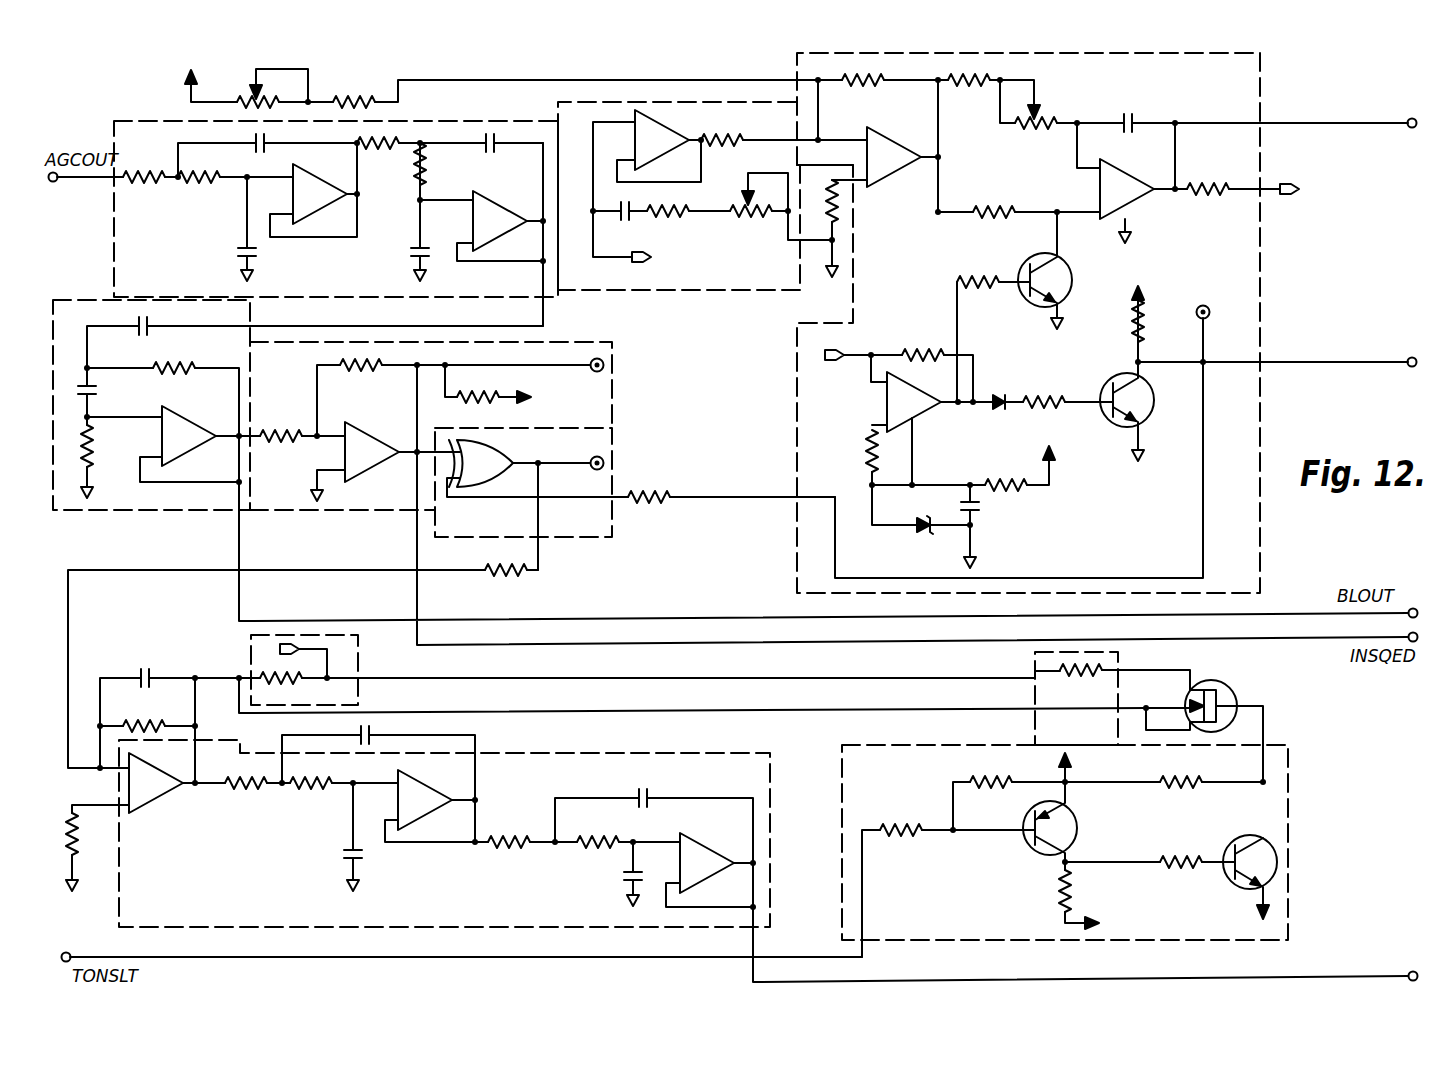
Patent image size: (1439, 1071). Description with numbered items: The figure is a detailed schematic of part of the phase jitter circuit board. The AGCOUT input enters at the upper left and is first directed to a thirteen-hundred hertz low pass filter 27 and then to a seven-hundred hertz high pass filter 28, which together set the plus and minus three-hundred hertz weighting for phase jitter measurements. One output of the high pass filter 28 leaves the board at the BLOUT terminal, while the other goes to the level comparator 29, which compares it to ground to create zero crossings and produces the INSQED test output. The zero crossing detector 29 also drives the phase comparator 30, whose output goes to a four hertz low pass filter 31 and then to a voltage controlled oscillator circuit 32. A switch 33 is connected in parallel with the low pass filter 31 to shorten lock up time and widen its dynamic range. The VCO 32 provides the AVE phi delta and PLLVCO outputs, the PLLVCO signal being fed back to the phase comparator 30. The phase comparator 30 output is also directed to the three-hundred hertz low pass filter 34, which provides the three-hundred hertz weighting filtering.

The 1300 Hz low pass filter 27 is at (114, 238).
The 700 Hz high pass filter 28 is at (187, 511).
The level comparator 29 is at (373, 511).
The phase comparator 30 is at (612, 520).
The 4 Hz low pass filter 31 is at (729, 292).
The voltage controlled oscillator circuit 32 is at (1261, 279).
The switch 33 is at (1288, 829).
The 300 Hz low pass filter 34 is at (630, 753).